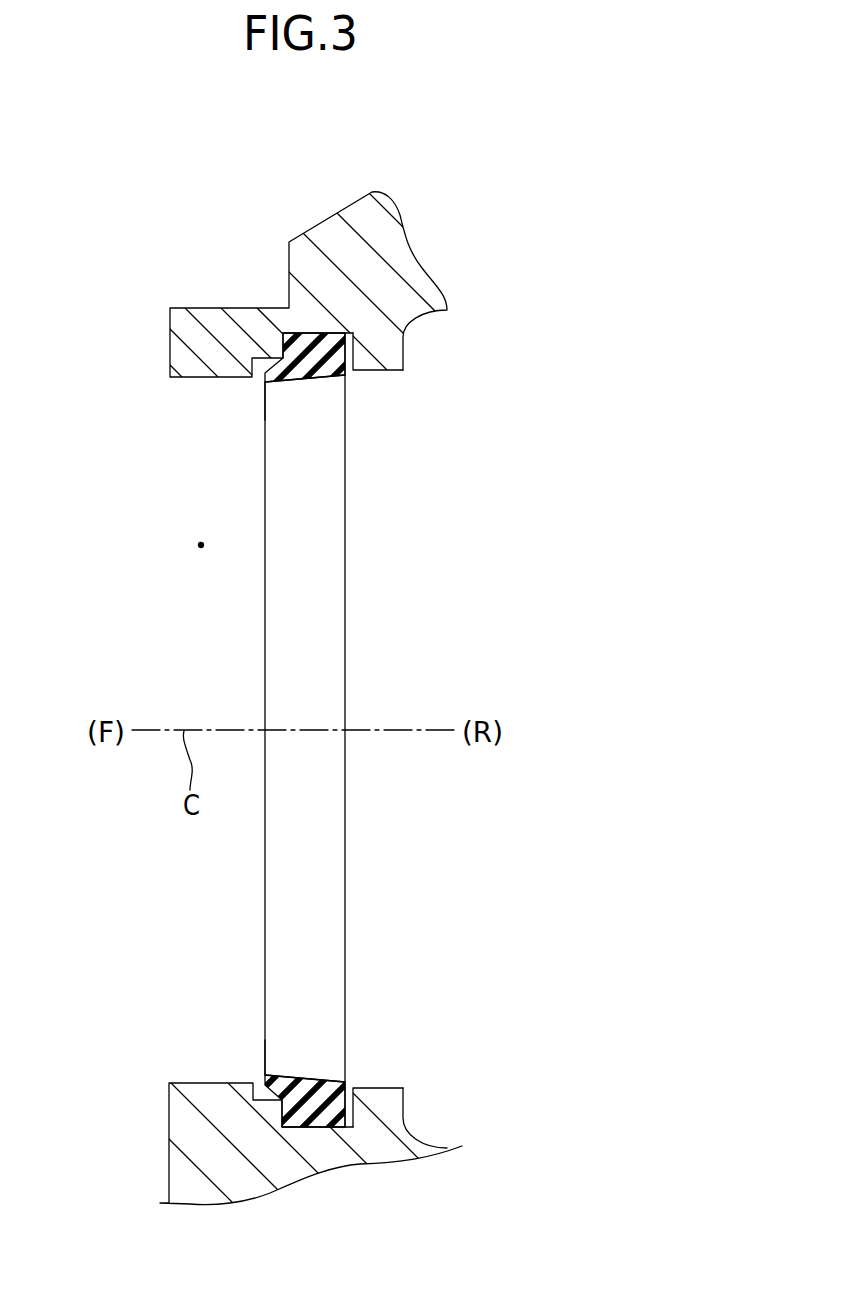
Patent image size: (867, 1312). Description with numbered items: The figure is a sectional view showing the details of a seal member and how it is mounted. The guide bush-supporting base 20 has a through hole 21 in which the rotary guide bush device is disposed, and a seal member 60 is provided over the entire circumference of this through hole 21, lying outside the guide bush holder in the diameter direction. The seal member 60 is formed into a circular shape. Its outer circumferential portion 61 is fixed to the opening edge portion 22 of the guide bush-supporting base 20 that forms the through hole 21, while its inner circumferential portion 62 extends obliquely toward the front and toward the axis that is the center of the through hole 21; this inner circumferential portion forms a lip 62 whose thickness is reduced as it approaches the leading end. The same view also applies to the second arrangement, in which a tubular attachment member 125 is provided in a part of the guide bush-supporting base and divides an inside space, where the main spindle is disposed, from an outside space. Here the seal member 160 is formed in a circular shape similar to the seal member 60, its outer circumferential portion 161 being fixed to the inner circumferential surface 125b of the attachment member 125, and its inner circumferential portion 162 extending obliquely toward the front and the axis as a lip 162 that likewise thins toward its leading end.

The guide bush-supporting base 20 is at (278, 700).
The tubular attachment member 125 is at (187, 328).
The through hole 21 is at (198, 545).
The opening edge portion 22 is at (414, 730).
The inner circumferential surface 125b is at (364, 353).
The seal member 60 is at (252, 730).
The seal member 160 is at (252, 730).
The outer circumferential portion 61 is at (286, 739).
The outer circumferential portion 161 is at (308, 343).
The lip 62 is at (355, 728).
The lip 162 is at (276, 384).